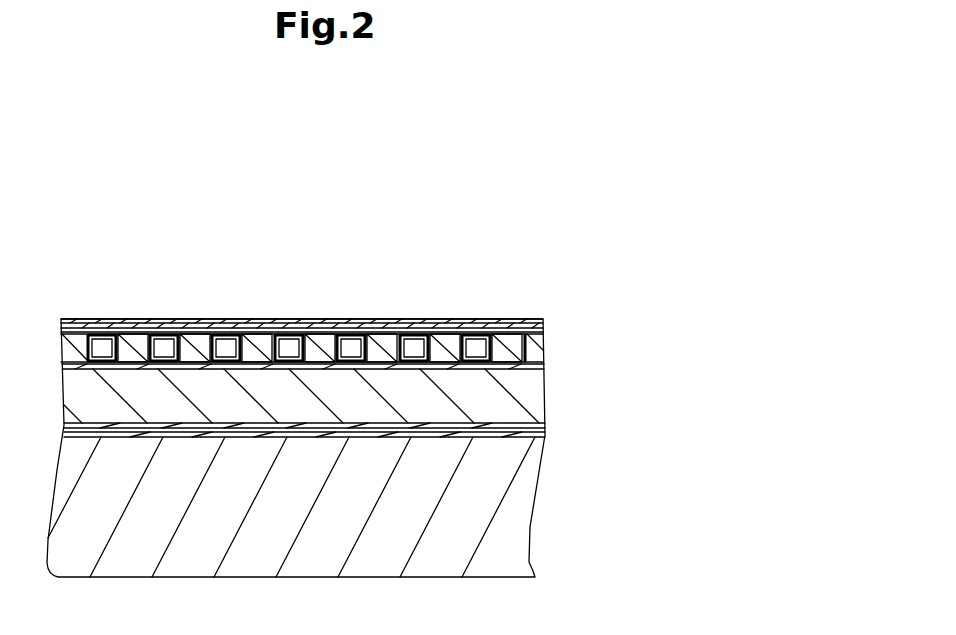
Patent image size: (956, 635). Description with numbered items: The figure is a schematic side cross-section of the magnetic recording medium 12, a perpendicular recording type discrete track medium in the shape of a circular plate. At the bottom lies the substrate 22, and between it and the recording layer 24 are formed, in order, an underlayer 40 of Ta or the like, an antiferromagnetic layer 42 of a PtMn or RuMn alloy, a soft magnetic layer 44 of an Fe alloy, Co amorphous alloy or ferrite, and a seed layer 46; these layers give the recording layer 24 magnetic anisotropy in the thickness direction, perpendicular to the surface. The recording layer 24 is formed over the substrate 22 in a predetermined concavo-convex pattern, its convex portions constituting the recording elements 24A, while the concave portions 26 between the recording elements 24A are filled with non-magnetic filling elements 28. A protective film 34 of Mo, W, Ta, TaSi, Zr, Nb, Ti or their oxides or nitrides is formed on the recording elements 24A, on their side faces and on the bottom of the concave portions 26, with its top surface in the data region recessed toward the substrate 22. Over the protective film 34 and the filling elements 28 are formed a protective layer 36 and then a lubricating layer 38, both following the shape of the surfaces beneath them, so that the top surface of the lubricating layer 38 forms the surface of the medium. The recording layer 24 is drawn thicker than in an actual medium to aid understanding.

The magnetic recording medium 12 is at (342, 216).
The substrate 22 is at (531, 527).
The recording layer 24 is at (550, 346).
The recording element 24A is at (388, 342).
The concave portion 26 is at (348, 338).
The non-magnetic filling element 28 is at (365, 343).
The protective film 34 is at (451, 332).
The protective layer 36 is at (545, 327).
The lubricating layer 38 is at (543, 320).
The underlayer 40 is at (546, 436).
The antiferromagnetic layer 42 is at (546, 428).
The soft magnetic layer 44 is at (546, 403).
The seed layer 46 is at (545, 365).